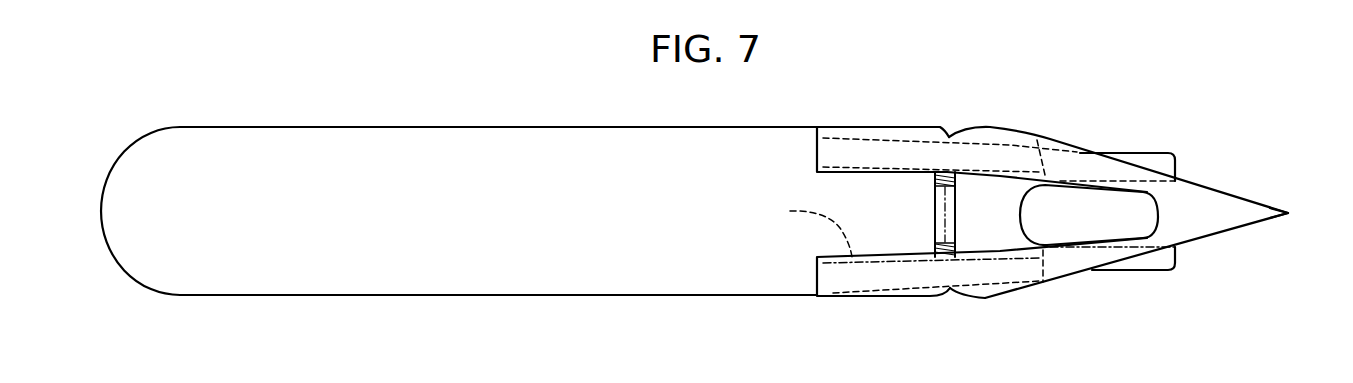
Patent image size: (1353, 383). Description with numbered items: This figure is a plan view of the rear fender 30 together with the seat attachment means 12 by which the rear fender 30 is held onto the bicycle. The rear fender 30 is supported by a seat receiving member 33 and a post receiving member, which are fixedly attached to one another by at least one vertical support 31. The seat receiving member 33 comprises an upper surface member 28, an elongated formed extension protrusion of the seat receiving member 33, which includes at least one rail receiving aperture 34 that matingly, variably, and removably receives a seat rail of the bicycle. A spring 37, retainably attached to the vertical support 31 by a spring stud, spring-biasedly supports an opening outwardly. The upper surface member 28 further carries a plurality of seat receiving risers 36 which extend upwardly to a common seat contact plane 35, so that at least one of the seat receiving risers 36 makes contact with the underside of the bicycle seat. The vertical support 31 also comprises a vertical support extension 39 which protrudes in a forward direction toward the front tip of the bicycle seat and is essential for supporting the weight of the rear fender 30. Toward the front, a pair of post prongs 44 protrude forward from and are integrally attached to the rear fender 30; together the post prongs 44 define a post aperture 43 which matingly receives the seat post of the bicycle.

The seat attachment means 12 is at (1245, 146).
The upper surface member 28 is at (1163, 242).
The rear fender 30 is at (187, 299).
The vertical support 31 is at (833, 173).
The seat receiving member 33 is at (835, 277).
The rail receiving aperture 34 is at (948, 136).
The common seat contact plane 35 is at (1266, 382).
The seat receiving riser 36 is at (1290, 213).
The spring 37 is at (935, 177).
The vertical support extension 39 is at (1038, 140).
The post aperture 43 is at (1028, 218).
The post prong 44 is at (1160, 152).